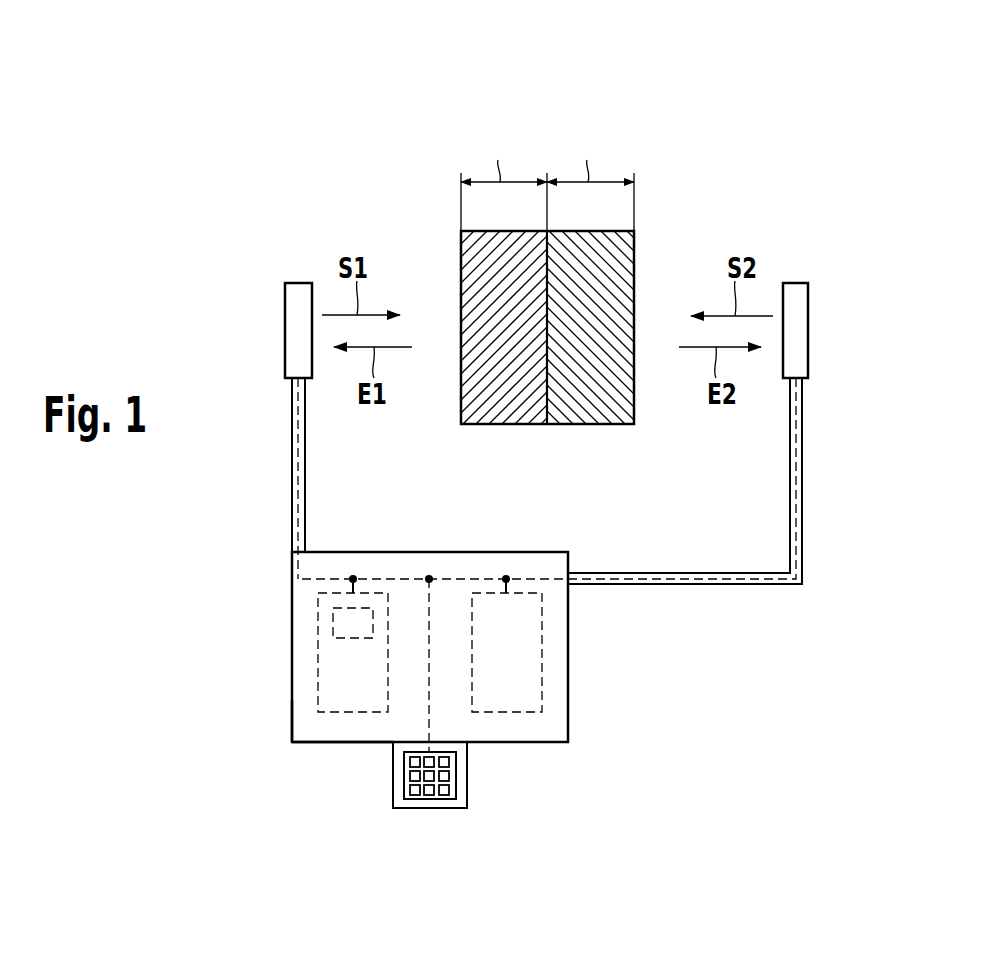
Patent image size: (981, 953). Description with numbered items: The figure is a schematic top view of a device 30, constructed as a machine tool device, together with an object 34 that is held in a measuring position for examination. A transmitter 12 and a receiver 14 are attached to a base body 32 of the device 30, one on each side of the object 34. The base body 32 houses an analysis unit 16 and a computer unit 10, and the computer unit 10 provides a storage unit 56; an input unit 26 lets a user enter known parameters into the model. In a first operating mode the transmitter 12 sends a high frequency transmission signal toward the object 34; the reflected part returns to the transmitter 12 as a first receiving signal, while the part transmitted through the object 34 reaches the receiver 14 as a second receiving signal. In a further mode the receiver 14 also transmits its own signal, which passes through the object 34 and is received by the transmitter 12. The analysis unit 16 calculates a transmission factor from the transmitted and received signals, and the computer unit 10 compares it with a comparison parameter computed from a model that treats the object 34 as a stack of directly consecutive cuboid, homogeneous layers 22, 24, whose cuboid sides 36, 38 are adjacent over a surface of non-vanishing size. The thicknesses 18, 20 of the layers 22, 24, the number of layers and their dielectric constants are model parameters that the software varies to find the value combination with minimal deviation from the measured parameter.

The computer unit 10 is at (350, 680).
The transmitter 12 is at (298, 315).
The receiver 14 is at (793, 316).
The analysis unit 16 is at (512, 676).
The thickness 18 is at (495, 122).
The thickness 20 is at (593, 122).
The layer 22 is at (515, 390).
The layer 24 is at (600, 390).
The input unit 26 is at (424, 815).
The device 30 is at (455, 736).
The base body 32 is at (327, 727).
The object 34 is at (563, 341).
The cuboid side 36 is at (547, 267).
The cuboid side 38 is at (547, 287).
The storage unit 56 is at (350, 625).